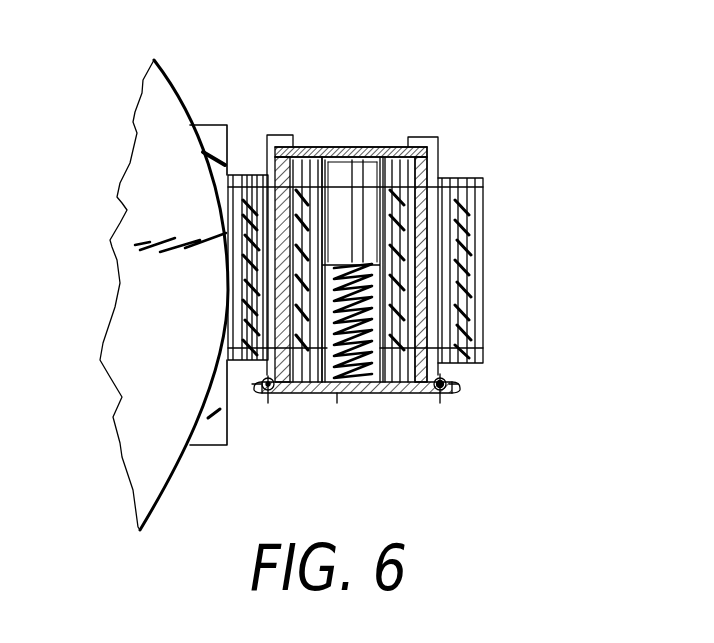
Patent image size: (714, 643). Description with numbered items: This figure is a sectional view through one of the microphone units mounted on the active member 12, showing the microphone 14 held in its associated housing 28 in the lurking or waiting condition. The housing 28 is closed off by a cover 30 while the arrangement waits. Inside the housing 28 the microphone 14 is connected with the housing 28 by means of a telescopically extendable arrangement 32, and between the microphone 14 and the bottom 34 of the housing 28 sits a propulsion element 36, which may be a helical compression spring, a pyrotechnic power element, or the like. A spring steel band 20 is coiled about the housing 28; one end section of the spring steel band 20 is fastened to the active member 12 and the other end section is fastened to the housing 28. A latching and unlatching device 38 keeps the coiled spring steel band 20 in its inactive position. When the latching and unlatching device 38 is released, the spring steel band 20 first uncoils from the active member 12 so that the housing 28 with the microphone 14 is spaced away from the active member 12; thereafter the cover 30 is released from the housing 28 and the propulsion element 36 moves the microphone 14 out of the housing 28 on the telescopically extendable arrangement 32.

The active member 12 is at (165, 352).
The microphone 14 is at (340, 225).
The spring steel band 20 is at (240, 172).
The housing 28 is at (423, 308).
The cover 30 is at (338, 152).
The telescopically extendable arrangement 32 is at (312, 147).
The bottom of the housing 34 is at (308, 390).
The propulsion element 36 is at (358, 390).
The latching and unlatching device 38 is at (425, 163).